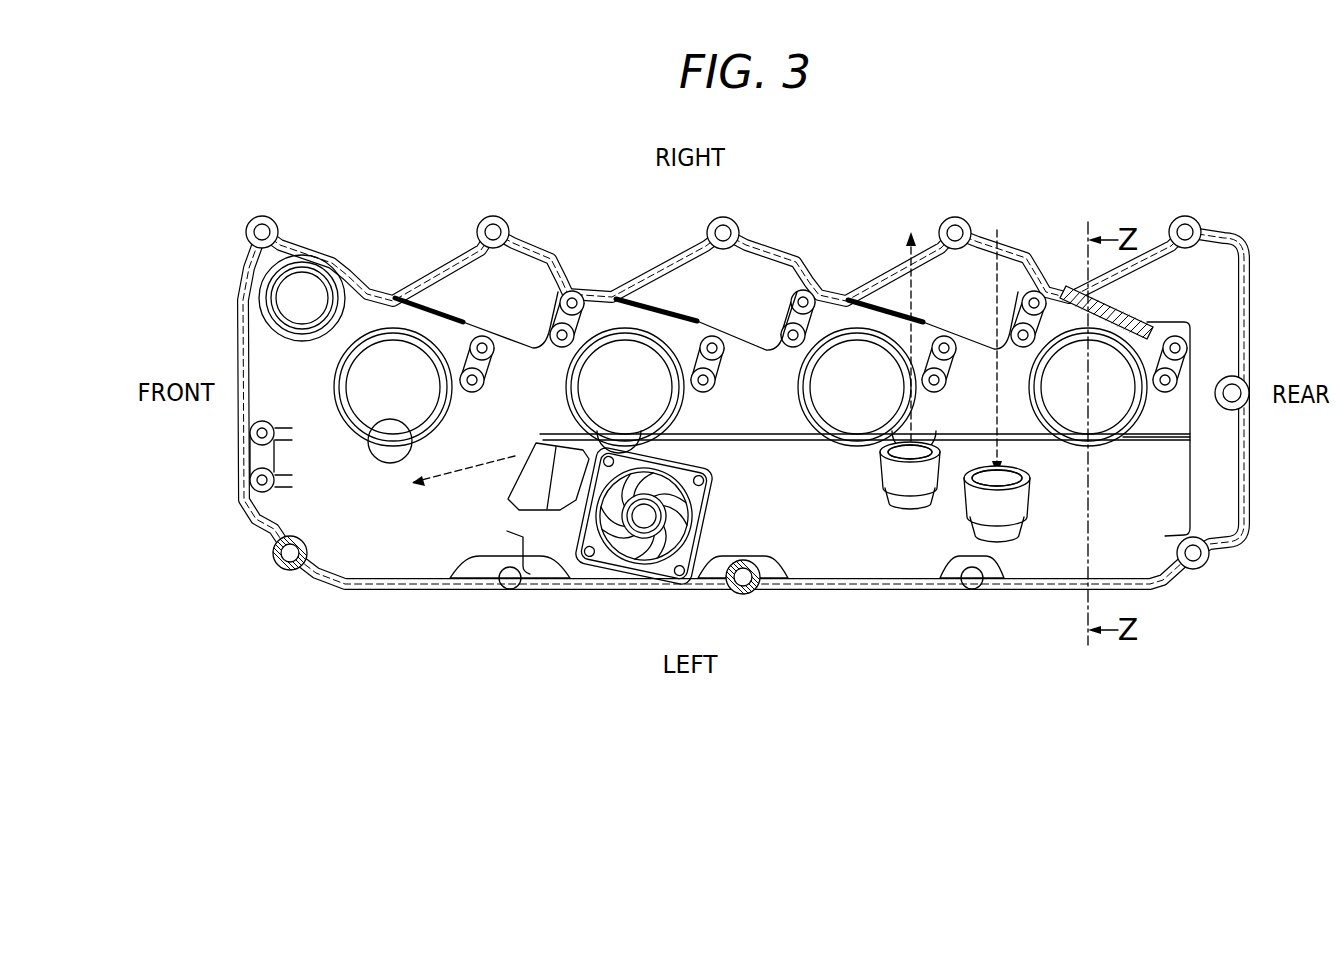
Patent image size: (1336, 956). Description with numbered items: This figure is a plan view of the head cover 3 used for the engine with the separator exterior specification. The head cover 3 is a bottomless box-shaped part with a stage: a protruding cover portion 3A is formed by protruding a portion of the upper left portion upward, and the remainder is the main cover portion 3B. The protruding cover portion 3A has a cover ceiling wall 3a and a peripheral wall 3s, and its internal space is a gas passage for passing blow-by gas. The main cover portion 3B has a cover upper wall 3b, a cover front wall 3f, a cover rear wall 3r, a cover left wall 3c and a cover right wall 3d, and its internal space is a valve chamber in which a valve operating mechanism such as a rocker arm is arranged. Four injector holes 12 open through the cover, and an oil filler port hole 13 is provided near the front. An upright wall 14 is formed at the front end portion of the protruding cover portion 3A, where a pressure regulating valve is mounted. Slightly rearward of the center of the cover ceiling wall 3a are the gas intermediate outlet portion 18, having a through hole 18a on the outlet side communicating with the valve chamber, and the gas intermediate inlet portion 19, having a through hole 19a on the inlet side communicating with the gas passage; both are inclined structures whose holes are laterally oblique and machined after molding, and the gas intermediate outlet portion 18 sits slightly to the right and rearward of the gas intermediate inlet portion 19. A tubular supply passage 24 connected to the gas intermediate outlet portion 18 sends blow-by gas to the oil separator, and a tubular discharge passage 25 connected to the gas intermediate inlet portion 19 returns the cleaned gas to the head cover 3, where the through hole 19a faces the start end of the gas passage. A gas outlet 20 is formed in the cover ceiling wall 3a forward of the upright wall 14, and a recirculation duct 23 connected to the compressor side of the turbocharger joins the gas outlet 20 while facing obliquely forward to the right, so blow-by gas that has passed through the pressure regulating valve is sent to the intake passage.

The head cover 3 is at (874, 234).
The cover ceiling wall 3a is at (805, 520).
The cover upper wall 3b is at (418, 532).
The cover left wall 3c is at (1046, 577).
The protruding cover portion 3A is at (855, 582).
The main cover portion 3B is at (351, 580).
The cover right wall 3d is at (615, 296).
The cover front wall 3f is at (245, 452).
The cover rear wall 3r is at (1250, 310).
The peripheral wall 3s is at (755, 432).
The injector hole 12 is at (400, 428).
The oil filler port hole 13 is at (343, 262).
The upright wall 14 is at (590, 558).
The gas intermediate outlet portion 18 is at (886, 472).
The through hole on the outlet side 18a is at (916, 445).
The gas intermediate inlet portion 19 is at (1022, 497).
The through hole on the inlet side 19a is at (997, 350).
The gas outlet 20 is at (549, 442).
The recirculation duct 23 is at (437, 470).
The supply passage 24 is at (885, 275).
The discharge passage 25 is at (997, 230).